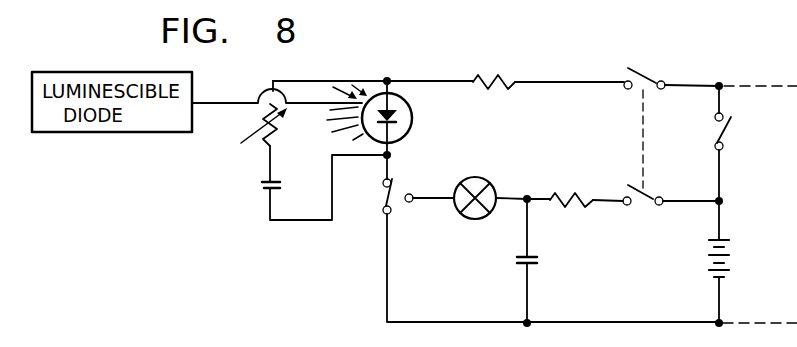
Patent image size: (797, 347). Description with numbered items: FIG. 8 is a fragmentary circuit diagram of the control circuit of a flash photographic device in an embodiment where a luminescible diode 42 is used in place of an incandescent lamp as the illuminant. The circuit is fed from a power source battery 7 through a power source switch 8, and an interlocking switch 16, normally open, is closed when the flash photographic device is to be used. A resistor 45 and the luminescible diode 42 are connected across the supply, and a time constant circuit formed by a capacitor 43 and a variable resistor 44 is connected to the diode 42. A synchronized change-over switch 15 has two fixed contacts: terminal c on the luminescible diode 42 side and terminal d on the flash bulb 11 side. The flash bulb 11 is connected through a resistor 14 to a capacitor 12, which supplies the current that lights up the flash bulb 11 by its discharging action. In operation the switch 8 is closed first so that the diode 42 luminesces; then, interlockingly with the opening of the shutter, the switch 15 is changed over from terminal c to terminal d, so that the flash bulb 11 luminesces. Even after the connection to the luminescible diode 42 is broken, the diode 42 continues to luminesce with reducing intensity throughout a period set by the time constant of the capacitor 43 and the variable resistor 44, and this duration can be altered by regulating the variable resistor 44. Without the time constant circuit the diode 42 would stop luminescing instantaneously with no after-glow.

The power source battery 7 is at (727, 241).
The power source switch 8 is at (729, 126).
The flash bulb 11 is at (475, 177).
The capacitor 12 is at (538, 256).
The resistor 14 is at (564, 191).
The switch 15 is at (392, 197).
The interlocking switch 16 is at (641, 131).
The luminescible diode 42 is at (412, 113).
The capacitor 43 is at (262, 181).
The variable resistor 44 is at (263, 116).
The resistor 45 is at (490, 76).
The terminal c is at (383, 180).
The terminal d is at (411, 193).